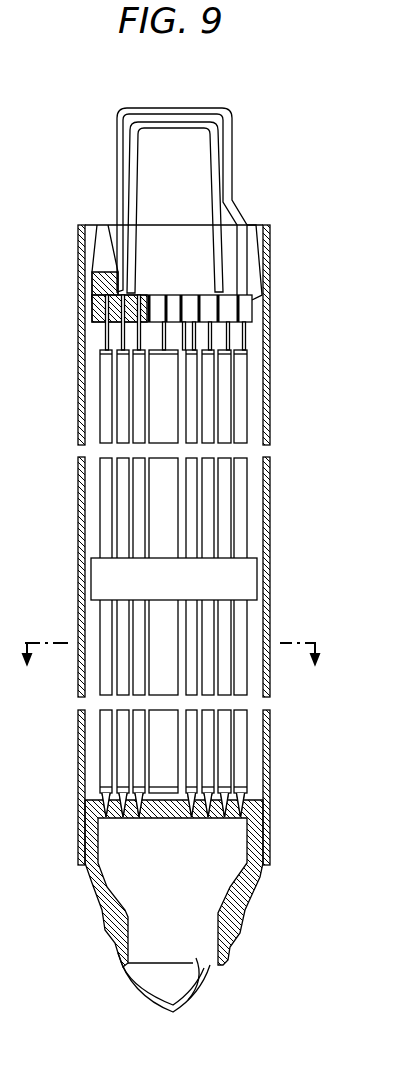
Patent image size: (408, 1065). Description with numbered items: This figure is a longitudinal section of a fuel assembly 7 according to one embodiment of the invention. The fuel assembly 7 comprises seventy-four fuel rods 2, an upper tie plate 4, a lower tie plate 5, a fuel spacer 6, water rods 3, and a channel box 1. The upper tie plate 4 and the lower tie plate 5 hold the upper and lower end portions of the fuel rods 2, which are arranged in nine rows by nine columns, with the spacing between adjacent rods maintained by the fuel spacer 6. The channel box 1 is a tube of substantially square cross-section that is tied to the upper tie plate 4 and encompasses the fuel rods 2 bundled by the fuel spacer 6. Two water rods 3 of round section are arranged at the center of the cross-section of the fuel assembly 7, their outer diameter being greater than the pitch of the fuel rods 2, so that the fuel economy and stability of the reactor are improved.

The channel box 1 is at (268, 528).
The fuel rods 2 is at (242, 407).
The water rods 3 is at (160, 503).
The upper tie plate 4 is at (242, 268).
The lower tie plate 5 is at (253, 890).
The fuel spacer 6 is at (243, 577).
The fuel assembly 7 is at (320, 317).